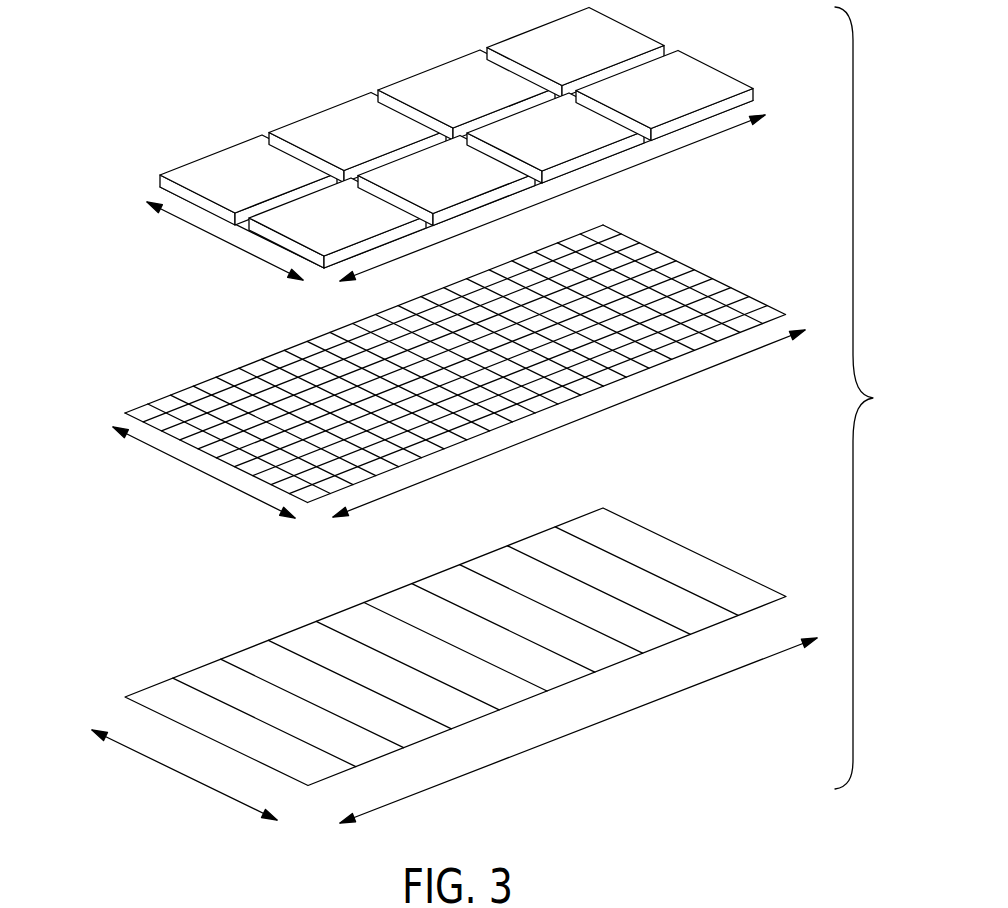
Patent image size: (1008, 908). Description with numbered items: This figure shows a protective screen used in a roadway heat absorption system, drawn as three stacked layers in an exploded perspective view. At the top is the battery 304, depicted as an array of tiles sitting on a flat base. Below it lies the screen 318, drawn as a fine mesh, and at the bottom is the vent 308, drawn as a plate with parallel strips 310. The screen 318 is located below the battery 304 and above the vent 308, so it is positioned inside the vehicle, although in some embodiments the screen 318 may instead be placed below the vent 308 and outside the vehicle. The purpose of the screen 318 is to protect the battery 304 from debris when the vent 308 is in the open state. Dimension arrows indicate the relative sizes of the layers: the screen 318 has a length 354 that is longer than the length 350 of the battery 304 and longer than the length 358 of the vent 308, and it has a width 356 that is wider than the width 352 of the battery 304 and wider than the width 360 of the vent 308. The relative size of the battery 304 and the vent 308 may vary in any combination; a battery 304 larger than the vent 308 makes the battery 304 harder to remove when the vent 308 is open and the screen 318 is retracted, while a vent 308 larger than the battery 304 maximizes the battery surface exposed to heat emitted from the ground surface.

The battery 304 is at (698, 72).
The vent 308 is at (124, 717).
The strip electrodes 310 is at (748, 600).
The screen 318 is at (737, 302).
The length of the battery 350 is at (617, 177).
The width of the battery 352 is at (240, 247).
The length of the screen 354 is at (618, 405).
The width of the screen 356 is at (208, 473).
The length of the vent 358 is at (608, 718).
The width of the vent 360 is at (187, 777).